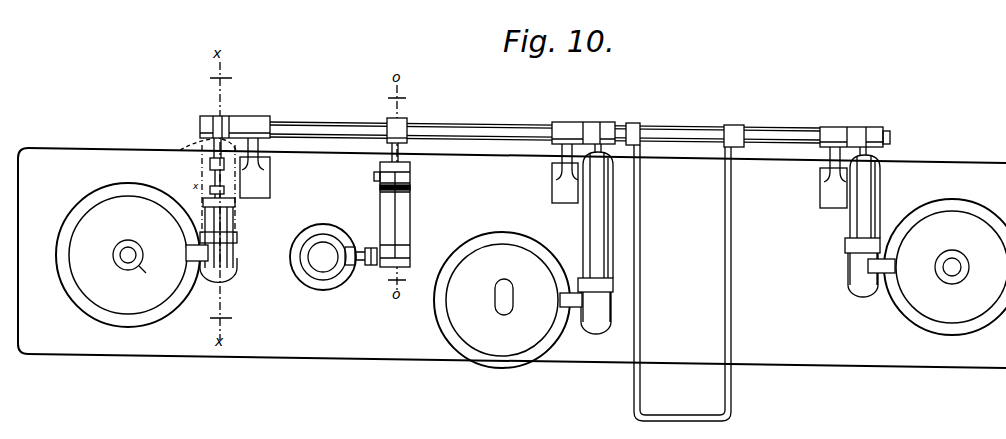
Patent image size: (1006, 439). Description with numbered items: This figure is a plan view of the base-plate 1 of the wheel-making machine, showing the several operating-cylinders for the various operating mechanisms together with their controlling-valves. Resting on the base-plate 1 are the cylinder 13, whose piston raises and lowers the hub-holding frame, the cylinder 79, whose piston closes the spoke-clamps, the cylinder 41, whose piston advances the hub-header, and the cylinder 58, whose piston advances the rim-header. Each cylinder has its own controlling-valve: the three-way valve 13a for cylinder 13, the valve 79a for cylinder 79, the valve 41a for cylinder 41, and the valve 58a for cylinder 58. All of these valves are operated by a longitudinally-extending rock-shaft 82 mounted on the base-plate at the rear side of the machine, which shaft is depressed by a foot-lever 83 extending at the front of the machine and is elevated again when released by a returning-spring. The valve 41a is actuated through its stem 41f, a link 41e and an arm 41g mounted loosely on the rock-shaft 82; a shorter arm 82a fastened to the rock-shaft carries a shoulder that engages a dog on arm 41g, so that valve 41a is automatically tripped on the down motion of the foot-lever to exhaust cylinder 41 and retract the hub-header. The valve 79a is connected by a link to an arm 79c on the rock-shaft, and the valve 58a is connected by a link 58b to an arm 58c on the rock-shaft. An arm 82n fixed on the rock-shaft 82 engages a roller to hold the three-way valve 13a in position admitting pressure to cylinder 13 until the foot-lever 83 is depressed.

The base-plate 1 is at (512, 258).
The cylinder 13 is at (322, 257).
The three-way valve 13a is at (389, 205).
The cylinder 41 is at (204, 216).
The valve 41a is at (231, 227).
The link 41e is at (197, 146).
The stem 41f is at (212, 188).
The arm 41g is at (216, 117).
The cylinder 58 is at (937, 267).
The valve 58a is at (882, 222).
The link 58b is at (860, 130).
The arm 58c is at (879, 131).
The cylinder 79 is at (508, 300).
The valve 79a is at (592, 226).
The arm 79c is at (602, 128).
The rock-shaft 82 is at (472, 132).
The shorter arm 82a is at (236, 117).
The arm 82n is at (402, 140).
The foot-lever 83 is at (685, 272).